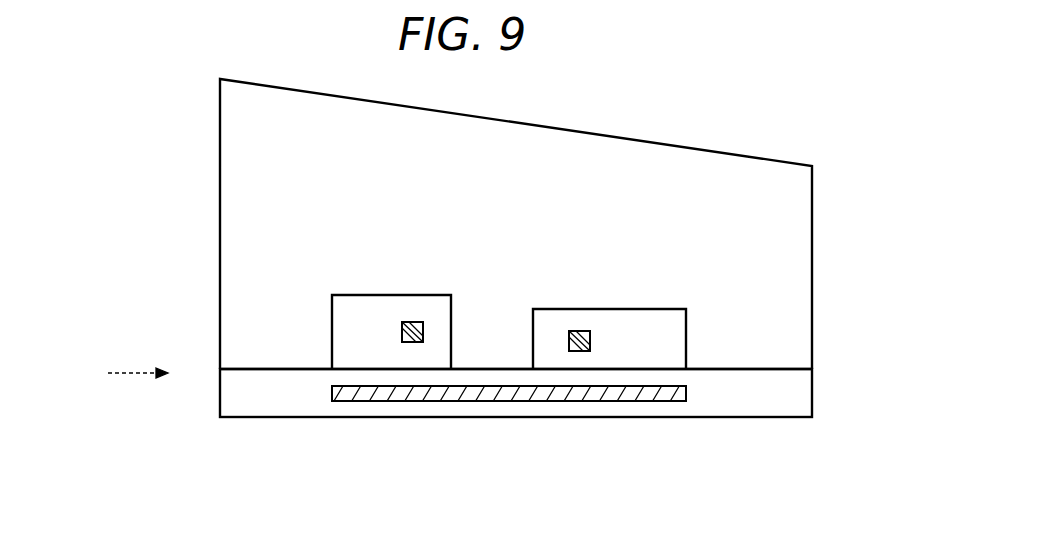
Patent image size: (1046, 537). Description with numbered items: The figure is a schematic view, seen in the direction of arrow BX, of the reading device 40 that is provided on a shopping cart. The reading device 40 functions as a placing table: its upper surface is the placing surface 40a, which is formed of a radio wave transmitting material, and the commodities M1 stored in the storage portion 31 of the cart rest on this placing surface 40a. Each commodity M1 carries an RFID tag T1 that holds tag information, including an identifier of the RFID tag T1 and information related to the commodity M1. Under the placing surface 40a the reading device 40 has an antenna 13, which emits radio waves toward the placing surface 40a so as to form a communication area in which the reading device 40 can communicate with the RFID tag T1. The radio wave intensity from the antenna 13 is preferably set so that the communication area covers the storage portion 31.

The storage portion 31 is at (775, 158).
The reading device 40 is at (733, 417).
The placing surface 40a is at (753, 369).
The antenna 13 is at (499, 401).
The commodity M1 is at (395, 294).
The RFID tag T1 is at (417, 322).
The arrow BX is at (138, 363).